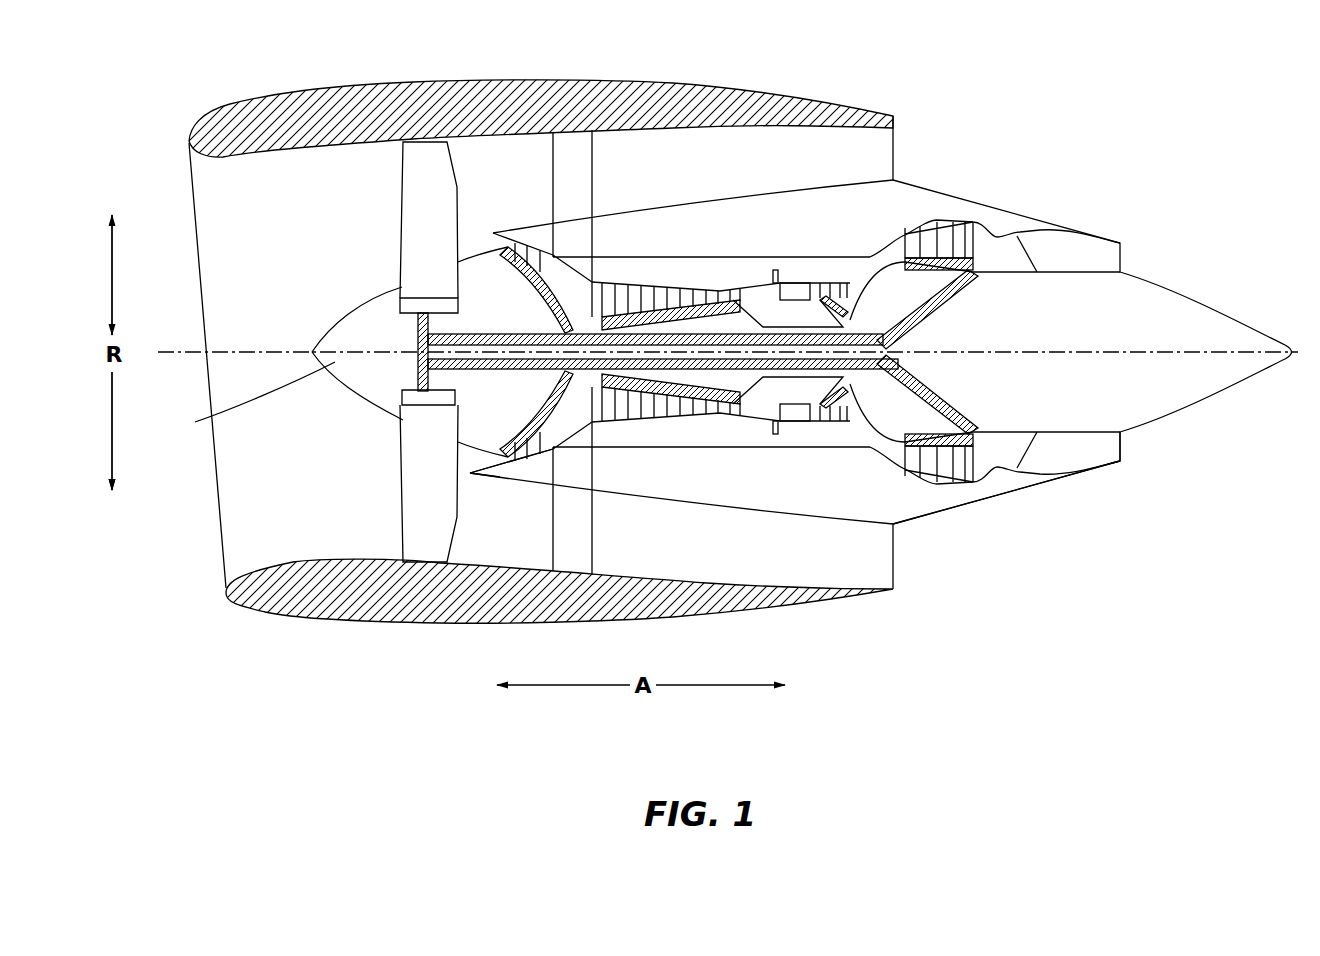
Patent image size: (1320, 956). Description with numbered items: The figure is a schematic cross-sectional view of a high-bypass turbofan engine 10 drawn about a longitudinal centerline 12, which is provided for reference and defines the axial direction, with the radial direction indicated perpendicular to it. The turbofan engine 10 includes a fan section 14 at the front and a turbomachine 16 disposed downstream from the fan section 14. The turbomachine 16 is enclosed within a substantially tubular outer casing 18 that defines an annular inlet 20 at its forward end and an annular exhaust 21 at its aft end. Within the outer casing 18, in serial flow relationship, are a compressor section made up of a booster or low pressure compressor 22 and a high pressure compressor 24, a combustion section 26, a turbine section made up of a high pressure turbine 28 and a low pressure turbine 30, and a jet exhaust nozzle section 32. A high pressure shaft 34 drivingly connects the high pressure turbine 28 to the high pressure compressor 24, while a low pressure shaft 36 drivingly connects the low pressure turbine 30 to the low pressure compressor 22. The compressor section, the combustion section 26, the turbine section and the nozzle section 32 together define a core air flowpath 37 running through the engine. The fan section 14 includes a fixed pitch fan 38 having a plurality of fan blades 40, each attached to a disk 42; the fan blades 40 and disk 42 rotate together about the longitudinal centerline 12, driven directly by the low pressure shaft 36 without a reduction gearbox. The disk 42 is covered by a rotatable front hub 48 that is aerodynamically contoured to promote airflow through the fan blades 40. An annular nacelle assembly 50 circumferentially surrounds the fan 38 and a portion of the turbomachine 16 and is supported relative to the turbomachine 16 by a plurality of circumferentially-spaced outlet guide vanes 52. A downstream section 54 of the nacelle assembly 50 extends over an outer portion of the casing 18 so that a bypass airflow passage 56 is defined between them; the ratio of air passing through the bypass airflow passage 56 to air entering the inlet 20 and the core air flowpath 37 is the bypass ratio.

The turbofan engine 10 is at (651, 367).
The longitudinal centerline 12 is at (1060, 351).
The fan section 14 is at (358, 165).
The turbomachine 16 is at (718, 236).
The outer casing 18 is at (747, 517).
The annular inlet 20 is at (476, 474).
The annular exhaust 21 is at (1124, 462).
The low pressure compressor 22 is at (549, 432).
The high pressure compressor 24 is at (620, 405).
The combustion section 26 is at (795, 420).
The high pressure turbine 28 is at (935, 413).
The low pressure turbine 30 is at (977, 488).
The jet exhaust nozzle section 32 is at (1034, 463).
The high pressure shaft 34 is at (828, 311).
The low pressure shaft 36 is at (927, 311).
The core air flowpath 37 is at (873, 433).
The fixed pitch fan 38 is at (368, 406).
The fan blades 40 is at (400, 502).
The disk 42 is at (400, 306).
The front hub 48 is at (195, 422).
The nacelle assembly 50 is at (440, 640).
The outlet guide vanes 52 is at (594, 162).
The downstream section of the nacelle assembly 54 is at (836, 106).
The bypass airflow passage 56 is at (770, 166).